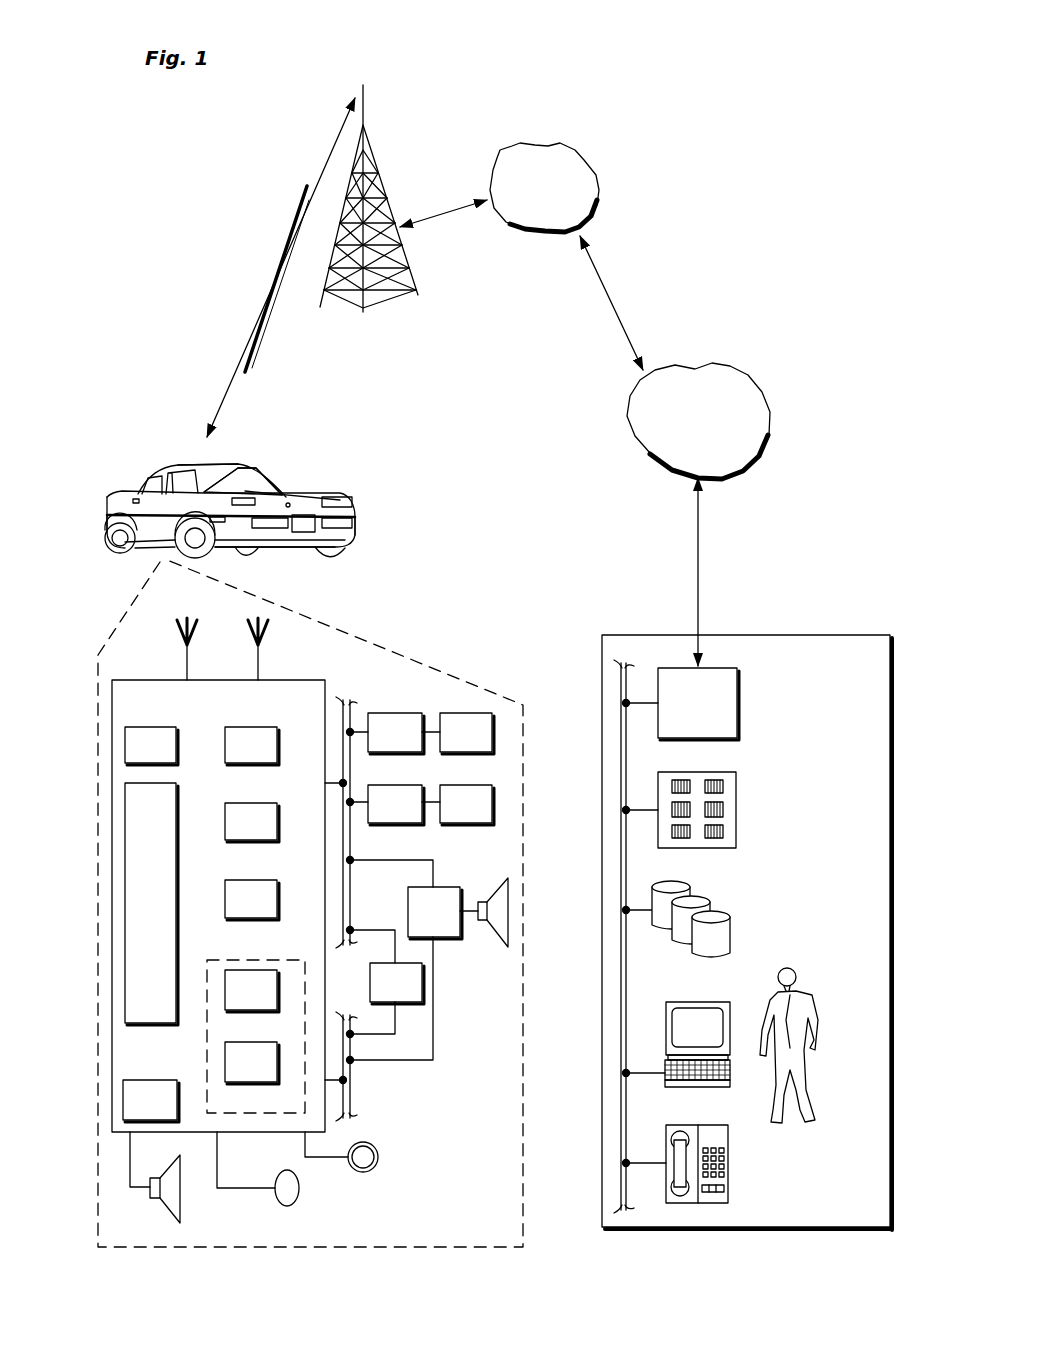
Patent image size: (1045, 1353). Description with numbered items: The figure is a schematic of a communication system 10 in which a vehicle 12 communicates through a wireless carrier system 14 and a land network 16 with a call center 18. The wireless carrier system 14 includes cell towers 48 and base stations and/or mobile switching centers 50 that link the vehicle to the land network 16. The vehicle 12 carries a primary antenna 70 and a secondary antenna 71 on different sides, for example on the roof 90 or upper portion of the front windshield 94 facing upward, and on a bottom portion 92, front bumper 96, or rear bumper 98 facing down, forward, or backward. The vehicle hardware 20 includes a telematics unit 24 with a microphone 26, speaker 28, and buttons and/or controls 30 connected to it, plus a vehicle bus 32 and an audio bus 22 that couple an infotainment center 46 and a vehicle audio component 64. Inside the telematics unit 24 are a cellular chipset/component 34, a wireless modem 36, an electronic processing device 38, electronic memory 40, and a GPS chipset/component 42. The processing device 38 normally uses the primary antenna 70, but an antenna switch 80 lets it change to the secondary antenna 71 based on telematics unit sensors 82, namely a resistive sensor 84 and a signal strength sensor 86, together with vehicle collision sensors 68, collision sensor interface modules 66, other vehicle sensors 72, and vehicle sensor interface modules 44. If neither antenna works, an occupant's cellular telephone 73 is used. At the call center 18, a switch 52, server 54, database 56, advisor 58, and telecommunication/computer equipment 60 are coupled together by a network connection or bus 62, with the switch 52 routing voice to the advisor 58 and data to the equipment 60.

The communication system 10 is at (213, 127).
The vehicle 12 is at (135, 470).
The wireless carrier system 14 is at (452, 110).
The land network 16 is at (766, 453).
The call center 18 is at (817, 635).
The vehicle hardware 20 is at (388, 652).
The audio bus 22 is at (350, 1093).
The telematics unit 24 is at (148, 680).
The microphone 26 is at (299, 1186).
The speaker 28 is at (182, 1185).
The buttons and/or controls 30 is at (374, 1147).
The vehicle bus 32 is at (350, 765).
The cellular chipset/component 34 is at (170, 764).
The wireless modem 36 is at (250, 764).
The electronic processing device 38 is at (177, 875).
The electronic memory 40 is at (150, 1080).
The GPS chipset/component 42 is at (250, 841).
The vehicle sensor interface modules 44 is at (395, 824).
The infotainment center 46 is at (370, 982).
The cell towers 48 is at (373, 173).
The base stations and/or mobile switching centers 50 is at (567, 148).
The switch 52 is at (740, 702).
The server 54 is at (738, 792).
The database 56 is at (698, 905).
The advisor 58 is at (798, 998).
The telecommunication/computer equipment 60 is at (730, 1170).
The network connection or bus 62 is at (628, 982).
The vehicle audio component 64 is at (408, 898).
The collision sensor interface modules 66 is at (397, 713).
The vehicle collision sensors 68 is at (463, 753).
The primary antenna 70 is at (272, 638).
The secondary antenna 71 is at (200, 638).
The other vehicle sensors 72 is at (468, 824).
The cellular telephone 73 is at (240, 488).
The antenna switch 80 is at (250, 919).
The telematics unit sensors 82 is at (225, 958).
The resistive sensor 84 is at (250, 1083).
The signal strength sensor 86 is at (250, 1011).
The roof 90 is at (197, 463).
The bottom portion 92 is at (263, 557).
The front windshield 94 is at (224, 478).
The front bumper 96 is at (343, 528).
The rear bumper 98 is at (107, 522).